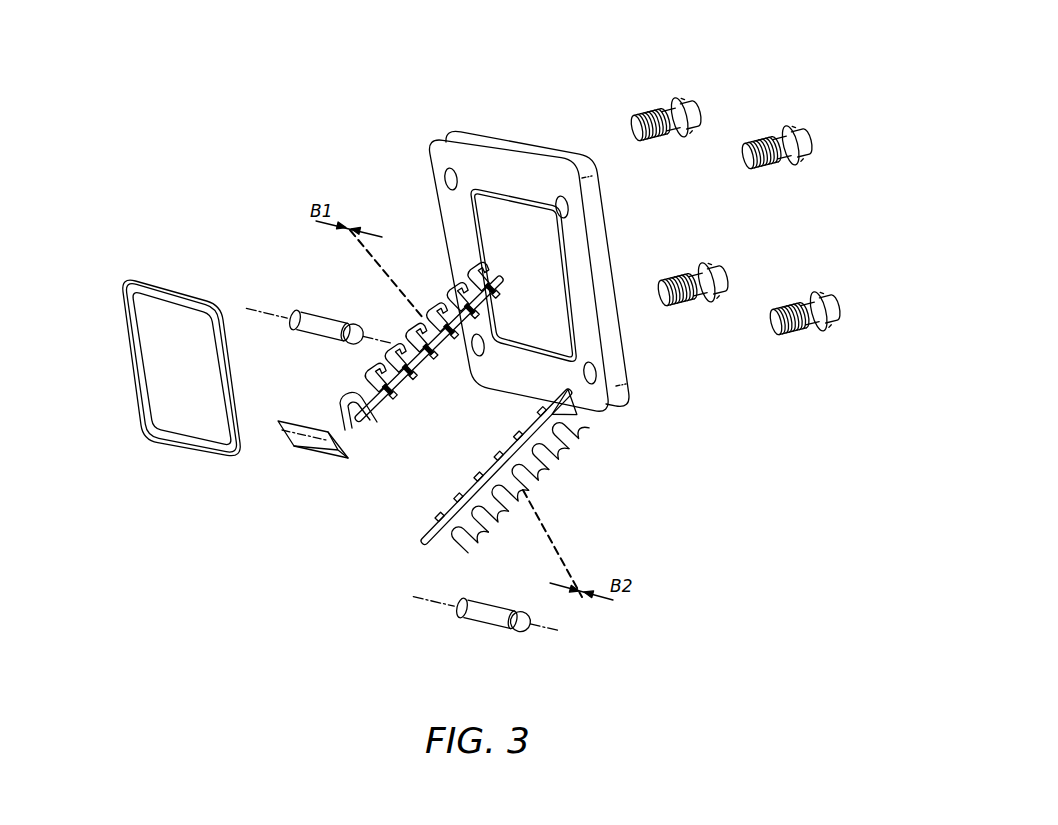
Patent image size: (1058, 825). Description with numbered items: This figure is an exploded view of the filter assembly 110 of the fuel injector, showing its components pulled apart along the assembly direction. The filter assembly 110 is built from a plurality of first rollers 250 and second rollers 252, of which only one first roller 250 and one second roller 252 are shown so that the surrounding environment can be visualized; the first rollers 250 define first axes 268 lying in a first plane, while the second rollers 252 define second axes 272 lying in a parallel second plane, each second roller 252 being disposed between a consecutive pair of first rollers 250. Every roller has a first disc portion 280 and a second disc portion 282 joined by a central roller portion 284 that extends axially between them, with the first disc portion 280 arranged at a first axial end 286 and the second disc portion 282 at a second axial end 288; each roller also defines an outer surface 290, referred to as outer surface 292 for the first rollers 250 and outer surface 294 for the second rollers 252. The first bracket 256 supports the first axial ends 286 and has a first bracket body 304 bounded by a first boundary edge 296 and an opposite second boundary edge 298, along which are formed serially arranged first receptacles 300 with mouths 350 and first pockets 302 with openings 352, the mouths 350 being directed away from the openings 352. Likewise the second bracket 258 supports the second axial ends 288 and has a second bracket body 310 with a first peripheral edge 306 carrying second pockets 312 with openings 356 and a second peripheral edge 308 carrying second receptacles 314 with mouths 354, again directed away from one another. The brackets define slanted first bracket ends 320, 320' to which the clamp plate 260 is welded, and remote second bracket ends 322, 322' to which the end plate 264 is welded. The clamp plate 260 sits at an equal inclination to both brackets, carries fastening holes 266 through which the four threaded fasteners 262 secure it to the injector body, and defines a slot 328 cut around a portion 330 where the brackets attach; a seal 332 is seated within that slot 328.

The filter assembly 110 is at (133, 157).
The first roller 250 is at (285, 322).
The second roller 252 is at (530, 632).
The first bracket 256 is at (342, 404).
The second bracket 258 is at (440, 572).
The clamp plate 260 is at (506, 140).
The set of fasteners 262 is at (690, 102).
The end plate 264 is at (312, 452).
The fastening holes 266 is at (438, 182).
The first axis 268 is at (257, 306).
The second axis 272 is at (557, 627).
The first disc portion 280 is at (292, 332).
The second disc portion 282 is at (346, 389).
The central roller portion 284 is at (335, 318).
The first axial end 286 is at (292, 312).
The second axial end 288 is at (358, 337).
The outer surface 290 is at (354, 323).
The outer surface of first roller 292 is at (320, 332).
The outer surface of second roller 294 is at (478, 617).
The first boundary edge 296 is at (468, 272).
The second boundary edge 298 is at (462, 345).
The first receptacles 300 is at (465, 290).
The first pockets 302 is at (527, 300).
The first bracket body 304 is at (370, 440).
The first peripheral edge 306 is at (459, 479).
The second peripheral edge 308 is at (540, 486).
The second bracket body 310 is at (478, 507).
The second pockets 312 is at (425, 530).
The second receptacles 314 is at (551, 462).
The first bracket end 320 is at (374, 294).
The first bracket end 320' is at (487, 499).
The second bracket end 322 is at (364, 461).
The second bracket end 322' is at (386, 554).
The slot 328 is at (552, 283).
The portion 330 is at (547, 257).
The seal 332 is at (183, 280).
The mouths 350 is at (347, 391).
The openings 352 is at (410, 395).
The mouths 354 is at (527, 495).
The openings 356 is at (455, 478).